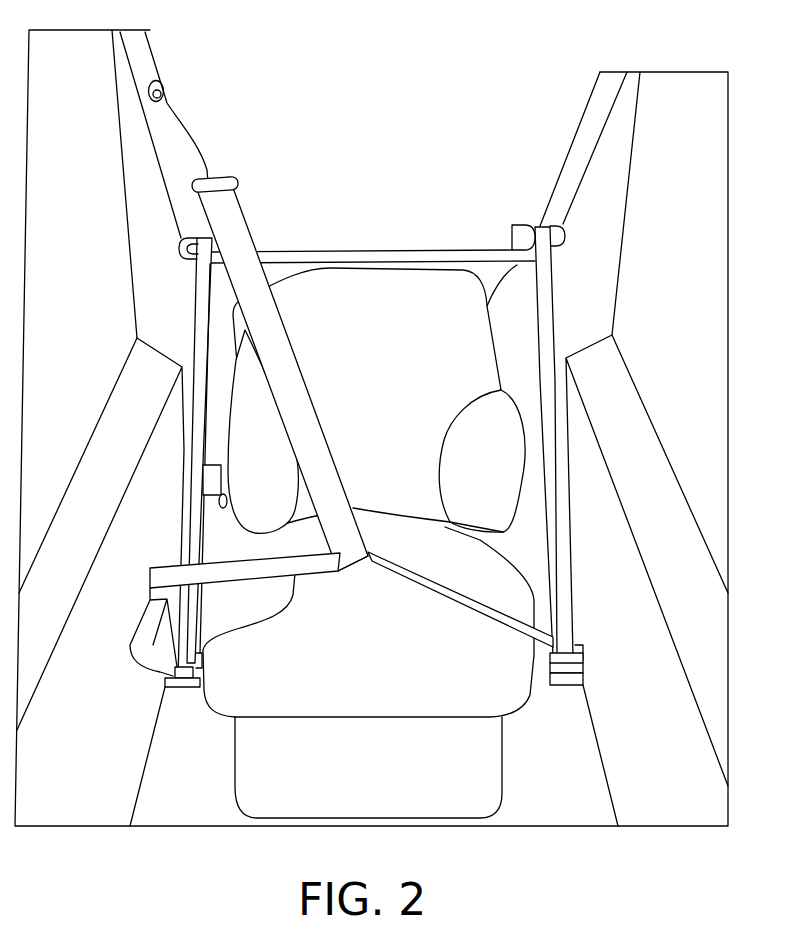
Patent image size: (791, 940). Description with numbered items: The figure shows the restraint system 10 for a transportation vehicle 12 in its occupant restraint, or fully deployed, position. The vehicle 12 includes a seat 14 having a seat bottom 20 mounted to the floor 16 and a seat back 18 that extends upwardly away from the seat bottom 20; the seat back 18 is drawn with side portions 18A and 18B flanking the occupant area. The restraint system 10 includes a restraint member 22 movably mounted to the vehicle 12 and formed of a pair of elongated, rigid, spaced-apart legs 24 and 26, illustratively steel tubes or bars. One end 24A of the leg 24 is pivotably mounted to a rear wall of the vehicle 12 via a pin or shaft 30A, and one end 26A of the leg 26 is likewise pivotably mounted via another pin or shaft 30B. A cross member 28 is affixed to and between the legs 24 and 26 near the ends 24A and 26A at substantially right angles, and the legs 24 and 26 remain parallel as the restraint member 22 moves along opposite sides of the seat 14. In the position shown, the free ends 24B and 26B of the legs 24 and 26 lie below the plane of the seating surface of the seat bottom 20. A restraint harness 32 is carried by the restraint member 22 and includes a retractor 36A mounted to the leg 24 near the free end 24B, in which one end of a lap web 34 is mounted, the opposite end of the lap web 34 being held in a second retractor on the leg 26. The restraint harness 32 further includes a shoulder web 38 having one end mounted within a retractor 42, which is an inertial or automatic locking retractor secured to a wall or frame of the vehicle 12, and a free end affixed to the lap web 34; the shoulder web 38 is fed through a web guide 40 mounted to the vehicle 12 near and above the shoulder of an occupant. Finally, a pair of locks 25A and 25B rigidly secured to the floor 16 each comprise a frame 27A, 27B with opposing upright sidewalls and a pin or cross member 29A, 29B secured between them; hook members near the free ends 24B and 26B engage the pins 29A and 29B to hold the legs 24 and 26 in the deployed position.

The restraint system 10 is at (688, 199).
The transportation vehicle 12 is at (678, 481).
The seat 14 is at (325, 735).
The floor 16 is at (211, 796).
The seat back 18 is at (376, 399).
The left seat back bolster 18A is at (260, 440).
The right seat back bolster 18B is at (525, 465).
The seat bottom 20 is at (377, 692).
The restraint member 22 is at (281, 373).
The leg 24 is at (192, 480).
The end of leg 24A is at (190, 238).
The free end of leg 24B is at (198, 678).
The lock 25A is at (178, 703).
The lock 25B is at (578, 705).
The leg 26 is at (580, 456).
The end of leg 26A is at (537, 222).
The free end of leg 26B is at (563, 688).
The frame 27A is at (165, 688).
The frame 27B is at (584, 670).
The cross member 28 is at (378, 250).
The pin or cross member 29A is at (200, 660).
The pin or cross member 29B is at (584, 662).
The pin or shaft 30A is at (186, 248).
The pin or shaft 30B is at (565, 236).
The restraint harness 32 is at (382, 537).
The lap web 34 is at (425, 582).
The retractor 36A is at (130, 657).
The shoulder web 38 is at (318, 412).
The web guide 40 is at (220, 157).
The retractor 42 is at (227, 508).